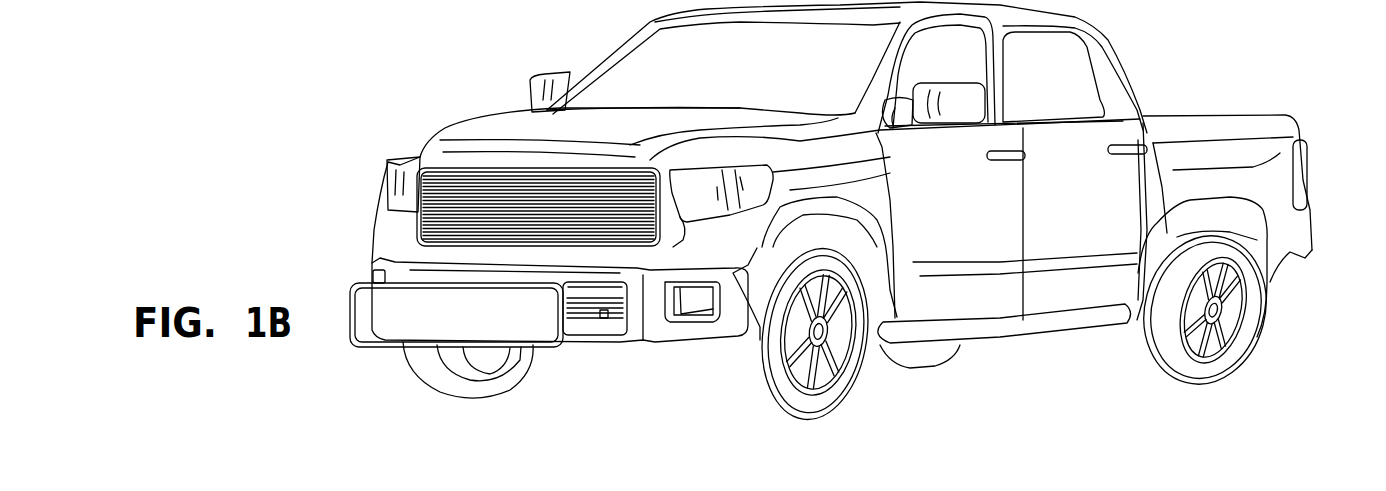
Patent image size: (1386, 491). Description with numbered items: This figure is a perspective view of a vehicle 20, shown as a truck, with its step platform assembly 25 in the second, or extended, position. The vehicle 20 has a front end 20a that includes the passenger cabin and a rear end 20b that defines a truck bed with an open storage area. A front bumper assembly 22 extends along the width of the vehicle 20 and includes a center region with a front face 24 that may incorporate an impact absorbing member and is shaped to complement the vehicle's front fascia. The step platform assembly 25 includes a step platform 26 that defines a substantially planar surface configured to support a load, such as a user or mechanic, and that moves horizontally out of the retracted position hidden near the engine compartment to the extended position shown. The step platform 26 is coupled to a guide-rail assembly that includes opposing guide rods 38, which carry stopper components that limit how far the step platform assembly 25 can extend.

The vehicle 20 is at (595, 52).
The front end 20a is at (437, 118).
The rear end 20b is at (1302, 113).
The front bumper assembly 22 is at (373, 277).
The front face 24 is at (478, 334).
The step platform assembly 25 is at (503, 355).
The step platform 26 is at (587, 300).
The guide rods 38 is at (580, 318).